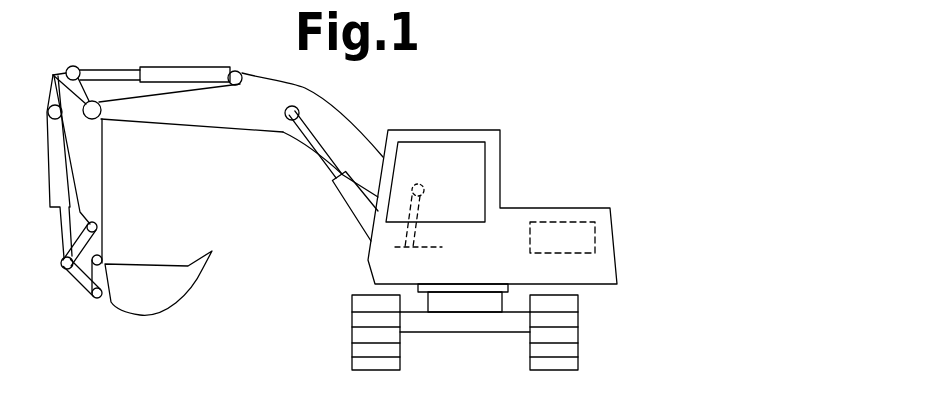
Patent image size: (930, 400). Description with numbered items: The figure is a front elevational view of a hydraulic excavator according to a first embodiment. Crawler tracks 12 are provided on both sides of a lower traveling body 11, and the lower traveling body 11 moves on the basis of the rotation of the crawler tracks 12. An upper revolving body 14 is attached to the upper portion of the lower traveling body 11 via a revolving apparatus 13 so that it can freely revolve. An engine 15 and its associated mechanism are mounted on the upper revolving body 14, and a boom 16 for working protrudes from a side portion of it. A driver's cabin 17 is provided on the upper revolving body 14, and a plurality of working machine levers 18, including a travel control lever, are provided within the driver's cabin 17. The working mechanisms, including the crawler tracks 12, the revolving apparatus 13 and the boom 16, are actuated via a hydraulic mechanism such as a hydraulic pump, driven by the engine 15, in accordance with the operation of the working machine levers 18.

The lower traveling body 11 is at (465, 332).
The crawler tracks 12 is at (352, 330).
The revolving apparatus 13 is at (472, 289).
The upper revolving body 14 is at (542, 207).
The engine 15 is at (581, 222).
The boom 16 is at (157, 117).
The driver's cabin 17 is at (467, 130).
The working machine levers 18 is at (423, 185).